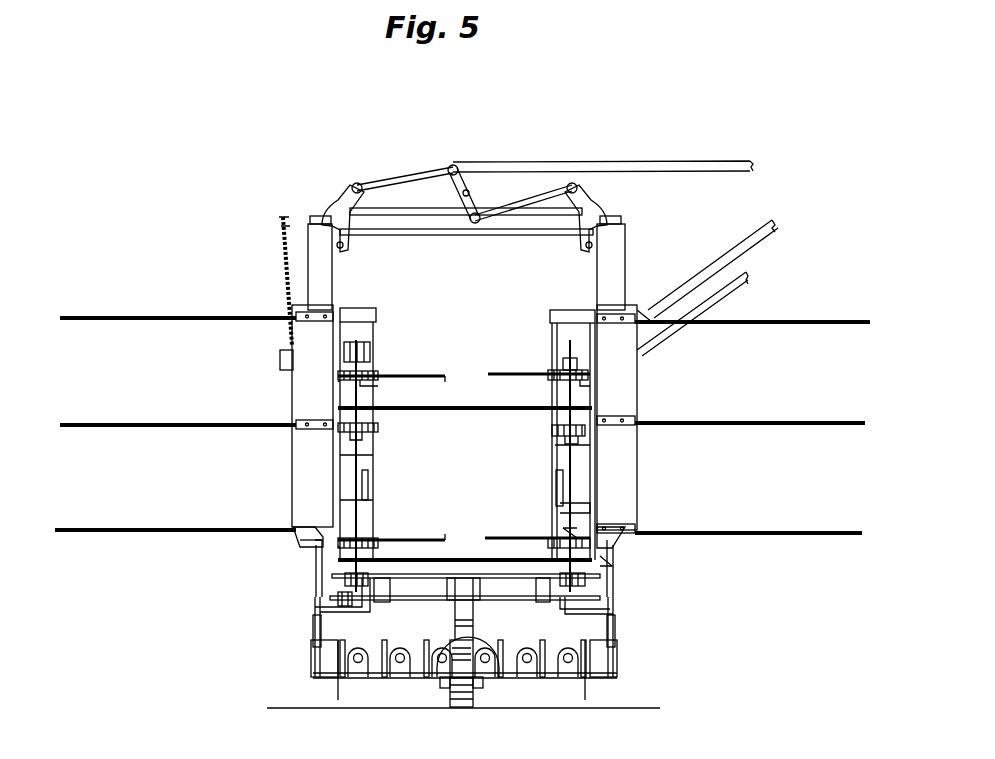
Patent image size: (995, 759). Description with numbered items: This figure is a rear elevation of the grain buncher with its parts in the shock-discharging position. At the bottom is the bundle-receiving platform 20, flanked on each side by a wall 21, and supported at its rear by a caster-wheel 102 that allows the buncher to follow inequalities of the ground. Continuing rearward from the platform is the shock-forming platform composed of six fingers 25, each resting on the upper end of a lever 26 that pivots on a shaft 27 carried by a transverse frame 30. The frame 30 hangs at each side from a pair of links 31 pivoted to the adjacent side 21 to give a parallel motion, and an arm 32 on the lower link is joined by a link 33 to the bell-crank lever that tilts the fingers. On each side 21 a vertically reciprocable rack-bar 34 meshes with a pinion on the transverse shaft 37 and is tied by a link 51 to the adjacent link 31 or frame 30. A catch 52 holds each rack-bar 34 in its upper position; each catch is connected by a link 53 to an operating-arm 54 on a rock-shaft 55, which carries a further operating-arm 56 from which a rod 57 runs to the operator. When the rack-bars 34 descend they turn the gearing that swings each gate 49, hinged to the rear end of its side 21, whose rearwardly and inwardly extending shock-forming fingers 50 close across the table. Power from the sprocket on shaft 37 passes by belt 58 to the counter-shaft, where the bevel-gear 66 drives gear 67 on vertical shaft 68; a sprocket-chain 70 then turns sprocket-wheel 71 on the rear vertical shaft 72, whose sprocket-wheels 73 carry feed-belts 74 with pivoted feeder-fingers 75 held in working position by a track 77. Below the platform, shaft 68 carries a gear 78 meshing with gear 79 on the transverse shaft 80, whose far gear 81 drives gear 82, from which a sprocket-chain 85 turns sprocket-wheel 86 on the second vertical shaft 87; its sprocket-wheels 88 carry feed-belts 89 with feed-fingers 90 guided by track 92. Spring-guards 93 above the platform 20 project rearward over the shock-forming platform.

The bundle-receiving platform 20 is at (453, 600).
The side wall 21 is at (467, 433).
The finger 25 is at (338, 700).
The lever 26 is at (378, 658).
The shaft 27 is at (400, 664).
The transverse frame 30 is at (448, 664).
The link 31 is at (317, 609).
The arm 32 is at (313, 640).
The link 33 is at (311, 665).
The rack-bar 34 is at (316, 222).
The transverse shaft 37 is at (478, 234).
The gate 49 is at (293, 394).
The shock-forming finger 50 is at (145, 423).
The link 51 is at (310, 541).
The catch 52 is at (347, 205).
The link 53 is at (405, 183).
The operating-arm 54 is at (468, 188).
The rock-shaft 55 is at (462, 193).
The operating-arm 56 is at (452, 167).
The link or rod 57 is at (693, 167).
The belt 58 is at (286, 268).
The bevel-gear 66 is at (338, 374).
The gear 67 is at (371, 356).
The vertical shaft 68 is at (551, 335).
The sprocket-chain 70 is at (368, 428).
The sprocket-wheel 71 is at (368, 438).
The vertical shaft 72 is at (360, 492).
The sprocket-wheel 73 is at (340, 382).
The feed-belt 74 is at (340, 548).
The feeder-finger 75 is at (444, 378).
The track 77 is at (378, 378).
The gear 78 is at (344, 580).
The gear 79 is at (343, 607).
The shaft 80 is at (412, 600).
The gear 81 is at (586, 582).
The gear 82 is at (606, 562).
The sprocket-chain 85 is at (554, 432).
The sprocket-wheel 86 is at (586, 434).
The vertical shaft 87 is at (558, 490).
The sprocket-wheel 88 is at (590, 376).
The feed-belt 89 is at (570, 366).
The feed-finger 90 is at (492, 373).
The track 92 is at (557, 371).
The spring-guard 93 is at (472, 411).
The caster-wheel 102 is at (470, 692).